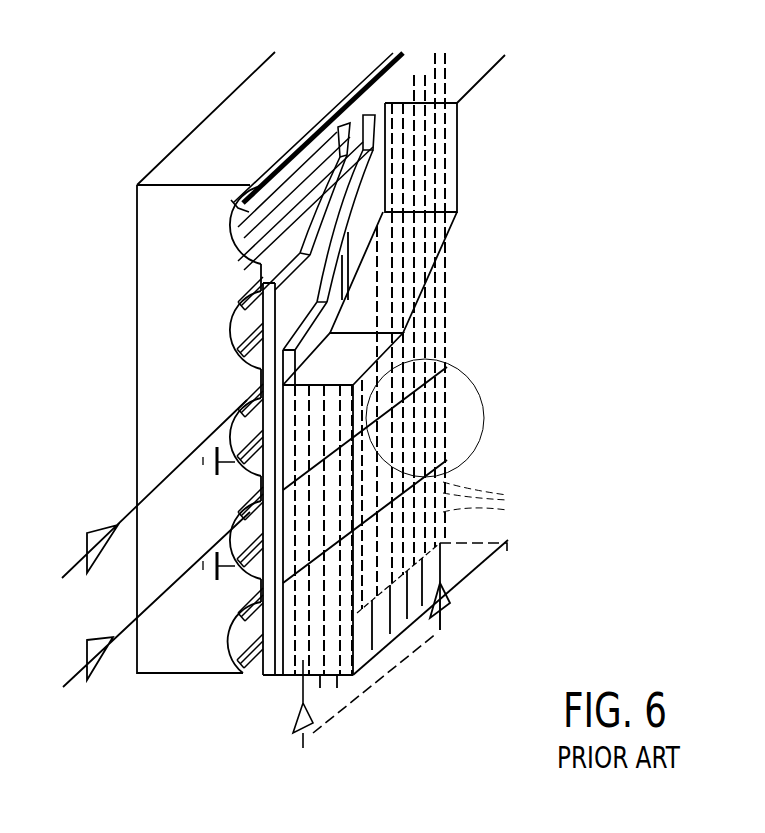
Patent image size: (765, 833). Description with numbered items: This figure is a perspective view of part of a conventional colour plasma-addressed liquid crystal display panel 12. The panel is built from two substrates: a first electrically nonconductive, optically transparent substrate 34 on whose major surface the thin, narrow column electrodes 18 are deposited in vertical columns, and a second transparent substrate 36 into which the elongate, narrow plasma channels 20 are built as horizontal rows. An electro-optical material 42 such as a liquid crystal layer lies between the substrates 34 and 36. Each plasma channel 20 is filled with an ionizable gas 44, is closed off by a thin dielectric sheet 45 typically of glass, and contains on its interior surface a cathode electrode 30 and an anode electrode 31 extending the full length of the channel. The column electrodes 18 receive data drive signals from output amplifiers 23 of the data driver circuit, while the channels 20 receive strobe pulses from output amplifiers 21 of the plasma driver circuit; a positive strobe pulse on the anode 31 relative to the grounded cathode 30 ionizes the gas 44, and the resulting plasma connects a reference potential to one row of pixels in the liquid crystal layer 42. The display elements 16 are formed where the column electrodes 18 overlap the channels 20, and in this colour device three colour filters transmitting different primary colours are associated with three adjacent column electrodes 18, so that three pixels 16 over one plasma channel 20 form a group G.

The second transparent substrate 36 is at (178, 143).
The thin dielectric sheet 45 is at (358, 122).
The electro-optical material 42 is at (372, 95).
The ionizable gas 44 is at (262, 430).
The anode electrode 31 is at (248, 507).
The output amplifiers 21 is at (93, 660).
The cathode electrode 30 is at (240, 592).
The plasma channels 20 is at (240, 637).
The output amplifiers 23 is at (294, 727).
The display elements 16 is at (400, 418).
The groups G is at (484, 424).
The column electrodes 18 is at (490, 497).
The first transparent substrate 34 is at (470, 567).
The display panel 12 is at (446, 620).